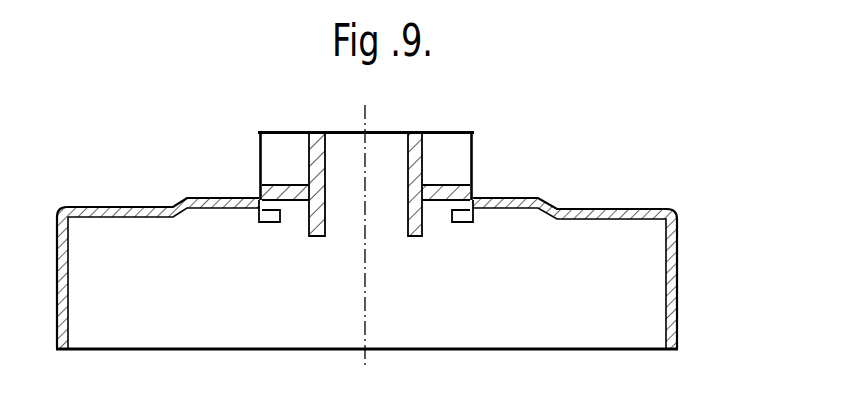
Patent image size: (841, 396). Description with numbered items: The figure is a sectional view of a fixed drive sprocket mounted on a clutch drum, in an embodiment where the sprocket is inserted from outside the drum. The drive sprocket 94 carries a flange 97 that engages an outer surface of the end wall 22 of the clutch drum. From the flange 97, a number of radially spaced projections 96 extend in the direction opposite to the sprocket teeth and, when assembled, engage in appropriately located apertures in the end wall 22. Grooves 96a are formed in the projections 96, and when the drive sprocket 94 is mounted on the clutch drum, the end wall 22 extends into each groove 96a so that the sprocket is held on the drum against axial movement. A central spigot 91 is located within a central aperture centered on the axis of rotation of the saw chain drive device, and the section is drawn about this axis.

The end wall 22 is at (641, 199).
The cap 94 is at (462, 165).
The central spigot 91 is at (304, 246).
The flange 97 is at (285, 177).
The projections 96 is at (255, 192).
The grooves 96a is at (467, 210).